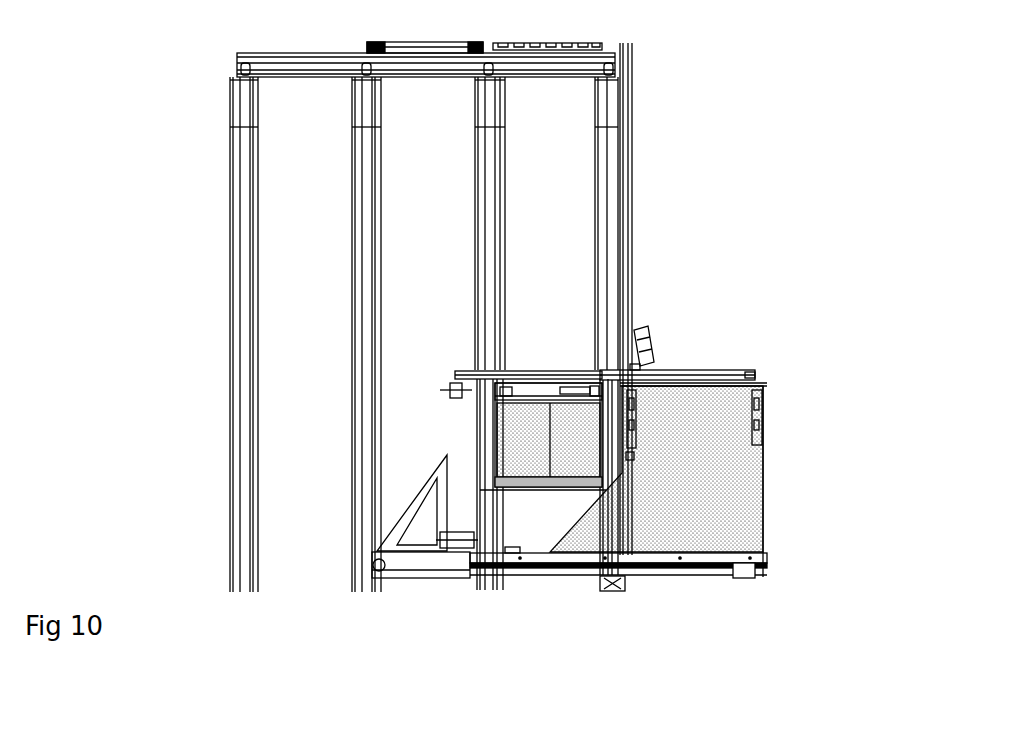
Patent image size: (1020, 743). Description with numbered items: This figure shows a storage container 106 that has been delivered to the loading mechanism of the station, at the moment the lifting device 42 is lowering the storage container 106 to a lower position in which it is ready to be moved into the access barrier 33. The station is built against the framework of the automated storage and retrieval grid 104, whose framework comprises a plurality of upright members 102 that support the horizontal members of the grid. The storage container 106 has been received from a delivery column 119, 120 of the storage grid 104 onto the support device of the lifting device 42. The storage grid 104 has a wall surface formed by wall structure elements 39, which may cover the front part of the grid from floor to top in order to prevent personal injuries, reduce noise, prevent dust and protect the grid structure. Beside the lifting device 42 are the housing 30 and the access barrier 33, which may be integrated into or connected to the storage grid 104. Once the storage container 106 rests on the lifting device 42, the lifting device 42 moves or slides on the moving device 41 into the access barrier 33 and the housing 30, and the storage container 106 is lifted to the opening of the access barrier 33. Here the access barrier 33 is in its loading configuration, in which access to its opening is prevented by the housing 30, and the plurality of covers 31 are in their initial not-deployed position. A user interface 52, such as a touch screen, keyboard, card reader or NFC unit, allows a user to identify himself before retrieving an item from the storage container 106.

The storage grid 104 is at (232, 85).
The upright member 102 is at (362, 338).
The delivery column 119 is at (629, 326).
The delivery column 120 is at (575, 187).
The wall structure element 39 is at (630, 262).
The user interface 52 is at (645, 338).
The housing 30 is at (735, 368).
The cover 31 is at (757, 440).
The access barrier 33 is at (755, 517).
The moving device 41 is at (685, 565).
The lifting device 42 is at (477, 475).
The storage container 106 is at (577, 455).